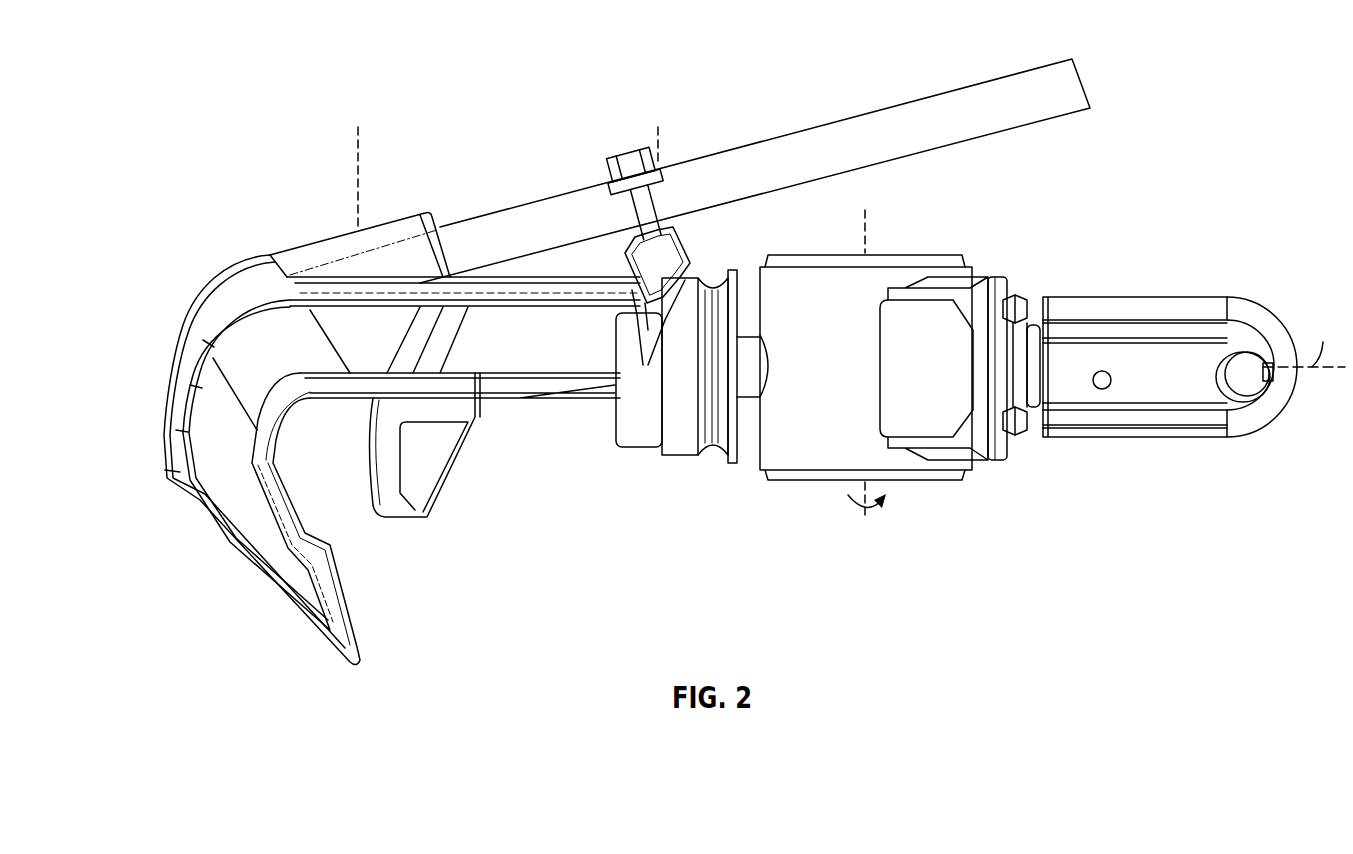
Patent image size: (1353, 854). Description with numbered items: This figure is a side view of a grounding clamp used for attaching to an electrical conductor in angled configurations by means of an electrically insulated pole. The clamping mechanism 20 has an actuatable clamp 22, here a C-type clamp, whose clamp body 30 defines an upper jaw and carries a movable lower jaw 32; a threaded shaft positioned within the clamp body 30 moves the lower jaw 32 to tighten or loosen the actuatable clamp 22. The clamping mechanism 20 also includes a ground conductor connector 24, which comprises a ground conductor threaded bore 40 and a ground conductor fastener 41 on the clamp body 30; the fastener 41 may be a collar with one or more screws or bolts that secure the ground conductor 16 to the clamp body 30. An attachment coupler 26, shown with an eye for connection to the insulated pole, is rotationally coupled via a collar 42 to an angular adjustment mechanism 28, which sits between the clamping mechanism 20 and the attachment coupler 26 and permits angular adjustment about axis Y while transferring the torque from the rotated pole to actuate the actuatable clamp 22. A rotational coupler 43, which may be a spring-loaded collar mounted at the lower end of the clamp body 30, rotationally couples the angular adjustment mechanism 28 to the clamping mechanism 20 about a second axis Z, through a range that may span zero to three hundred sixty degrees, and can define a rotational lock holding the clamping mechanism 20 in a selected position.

The ground conductor 16 is at (797, 153).
The clamping mechanism 20 is at (541, 500).
The actuatable clamp 22 is at (162, 370).
The ground conductor connector 24 is at (658, 127).
The attachment coupler 26 is at (1260, 322).
The angular adjustment mechanism 28 is at (813, 413).
The clamp body 30 is at (250, 347).
The movable lower jaw 32 is at (437, 470).
The ground conductor threaded bore 40 is at (373, 235).
The ground conductor fastener 41 is at (687, 250).
The collar 42 is at (1015, 297).
The rotational coupler 43 is at (677, 443).